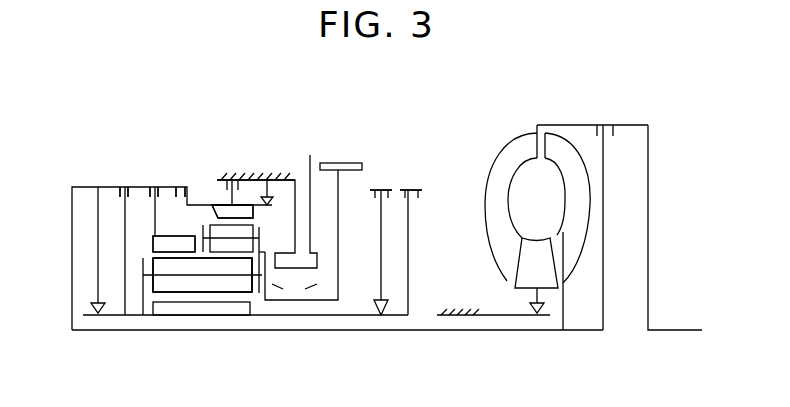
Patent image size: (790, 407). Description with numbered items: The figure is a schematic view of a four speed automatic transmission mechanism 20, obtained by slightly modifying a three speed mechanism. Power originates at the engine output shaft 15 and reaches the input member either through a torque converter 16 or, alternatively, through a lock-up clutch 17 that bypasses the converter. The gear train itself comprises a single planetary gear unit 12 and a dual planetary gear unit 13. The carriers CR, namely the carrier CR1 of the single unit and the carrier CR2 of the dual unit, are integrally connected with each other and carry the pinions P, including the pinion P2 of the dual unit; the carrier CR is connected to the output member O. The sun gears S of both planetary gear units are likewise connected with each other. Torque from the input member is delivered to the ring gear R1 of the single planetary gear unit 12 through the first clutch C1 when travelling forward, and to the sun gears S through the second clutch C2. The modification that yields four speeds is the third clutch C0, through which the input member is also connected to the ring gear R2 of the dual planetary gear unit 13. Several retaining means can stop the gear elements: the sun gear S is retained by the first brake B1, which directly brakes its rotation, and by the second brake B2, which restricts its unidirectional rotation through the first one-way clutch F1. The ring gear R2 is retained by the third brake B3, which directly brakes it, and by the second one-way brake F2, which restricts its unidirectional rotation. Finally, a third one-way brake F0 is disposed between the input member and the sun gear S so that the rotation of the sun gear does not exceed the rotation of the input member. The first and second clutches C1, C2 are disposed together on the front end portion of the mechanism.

The four speed automatic transmission mechanism 20 is at (117, 127).
The single planetary gear unit 12 is at (146, 236).
The dual planetary gear unit 13 is at (211, 197).
The engine output shaft 15 is at (672, 330).
The torque converter 16 is at (507, 141).
The lock-up clutch 17 is at (614, 133).
The ring gear R1 is at (174, 237).
The ring gear R2 is at (232, 213).
The pinion of the dual planetary gear unit P2 is at (245, 226).
The carrier of the single planetary gear unit CR1 is at (202, 275).
The carrier of the dual planetary gear unit CR2 is at (202, 275).
The pinions P is at (202, 276).
The sun gears S is at (206, 306).
The carriers CR is at (143, 318).
The third one-way brake F0 is at (97, 318).
The first one-way clutch F1 is at (370, 300).
The second one-way brake F2 is at (264, 179).
The first brake B1 is at (410, 177).
The second brake B2 is at (380, 177).
The third brake B3 is at (256, 167).
The third clutch C0 is at (176, 181).
The first clutch C1 is at (149, 181).
The second clutch C2 is at (119, 181).
The output member O is at (347, 163).